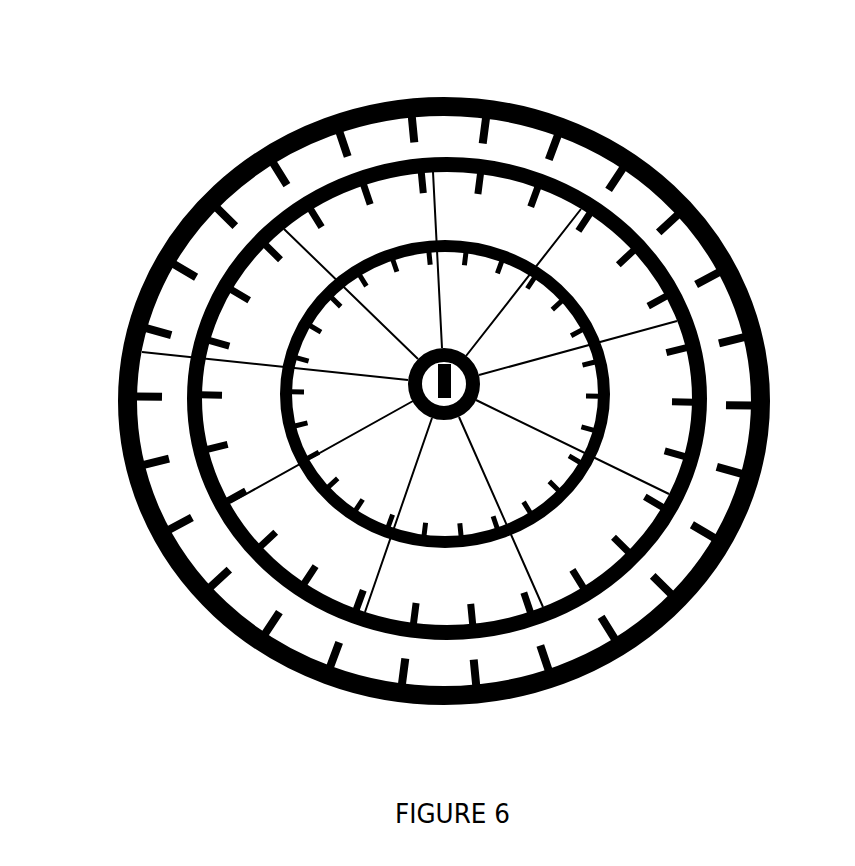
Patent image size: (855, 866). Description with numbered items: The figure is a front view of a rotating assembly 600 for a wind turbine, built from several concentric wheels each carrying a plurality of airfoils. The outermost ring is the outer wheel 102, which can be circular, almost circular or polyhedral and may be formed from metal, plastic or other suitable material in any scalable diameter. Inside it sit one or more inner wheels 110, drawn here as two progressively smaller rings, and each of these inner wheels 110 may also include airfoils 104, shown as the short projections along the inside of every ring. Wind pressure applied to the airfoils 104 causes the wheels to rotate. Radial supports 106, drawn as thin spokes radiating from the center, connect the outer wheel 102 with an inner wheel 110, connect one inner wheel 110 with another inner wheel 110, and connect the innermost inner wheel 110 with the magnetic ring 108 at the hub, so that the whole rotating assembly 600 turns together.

The rotating assembly 600 is at (686, 96).
The outer wheel 102 is at (757, 327).
The airfoils 104 is at (232, 336).
The radial supports 106 is at (338, 441).
The magnetic ring 108 is at (410, 373).
The inner wheel 110 is at (663, 257).